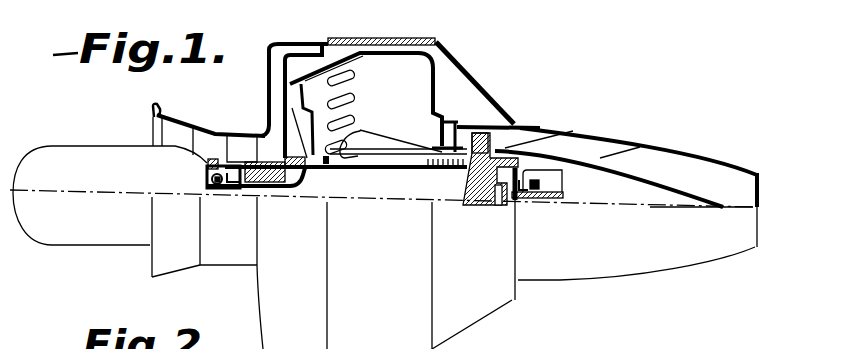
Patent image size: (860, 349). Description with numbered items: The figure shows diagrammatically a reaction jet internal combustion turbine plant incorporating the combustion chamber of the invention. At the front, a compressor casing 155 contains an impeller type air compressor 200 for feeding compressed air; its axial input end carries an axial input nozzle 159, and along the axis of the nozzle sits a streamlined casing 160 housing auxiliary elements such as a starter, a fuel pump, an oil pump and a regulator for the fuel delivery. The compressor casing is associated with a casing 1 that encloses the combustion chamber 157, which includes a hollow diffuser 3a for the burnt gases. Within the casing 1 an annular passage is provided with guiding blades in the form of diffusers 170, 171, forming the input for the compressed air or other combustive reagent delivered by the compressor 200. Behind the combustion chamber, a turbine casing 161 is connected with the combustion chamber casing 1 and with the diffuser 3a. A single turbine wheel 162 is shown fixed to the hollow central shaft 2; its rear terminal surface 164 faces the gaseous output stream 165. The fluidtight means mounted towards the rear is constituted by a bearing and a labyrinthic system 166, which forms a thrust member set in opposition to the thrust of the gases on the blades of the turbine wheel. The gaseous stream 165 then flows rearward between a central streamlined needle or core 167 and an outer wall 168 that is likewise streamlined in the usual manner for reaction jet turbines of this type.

The casing 1 is at (418, 37).
The hollow central shaft 2 is at (348, 165).
The hollow diffuser 3a is at (453, 124).
The compressor casing 155 is at (238, 128).
The combustion chamber 157 is at (420, 72).
The axial input nozzle 159 is at (173, 114).
The streamlined casing 160 is at (67, 165).
The turbine casing 161 is at (518, 126).
The turbine wheel 162 is at (487, 125).
The rear terminal surface 164 is at (627, 125).
The gaseous output stream 165 is at (633, 127).
The labyrinthic system 166 is at (642, 147).
The central streamlined needle 167 is at (651, 189).
The outer wall 168 is at (748, 166).
The diffuser 170 is at (279, 88).
The diffuser 171 is at (310, 47).
The compressor 200 is at (235, 150).